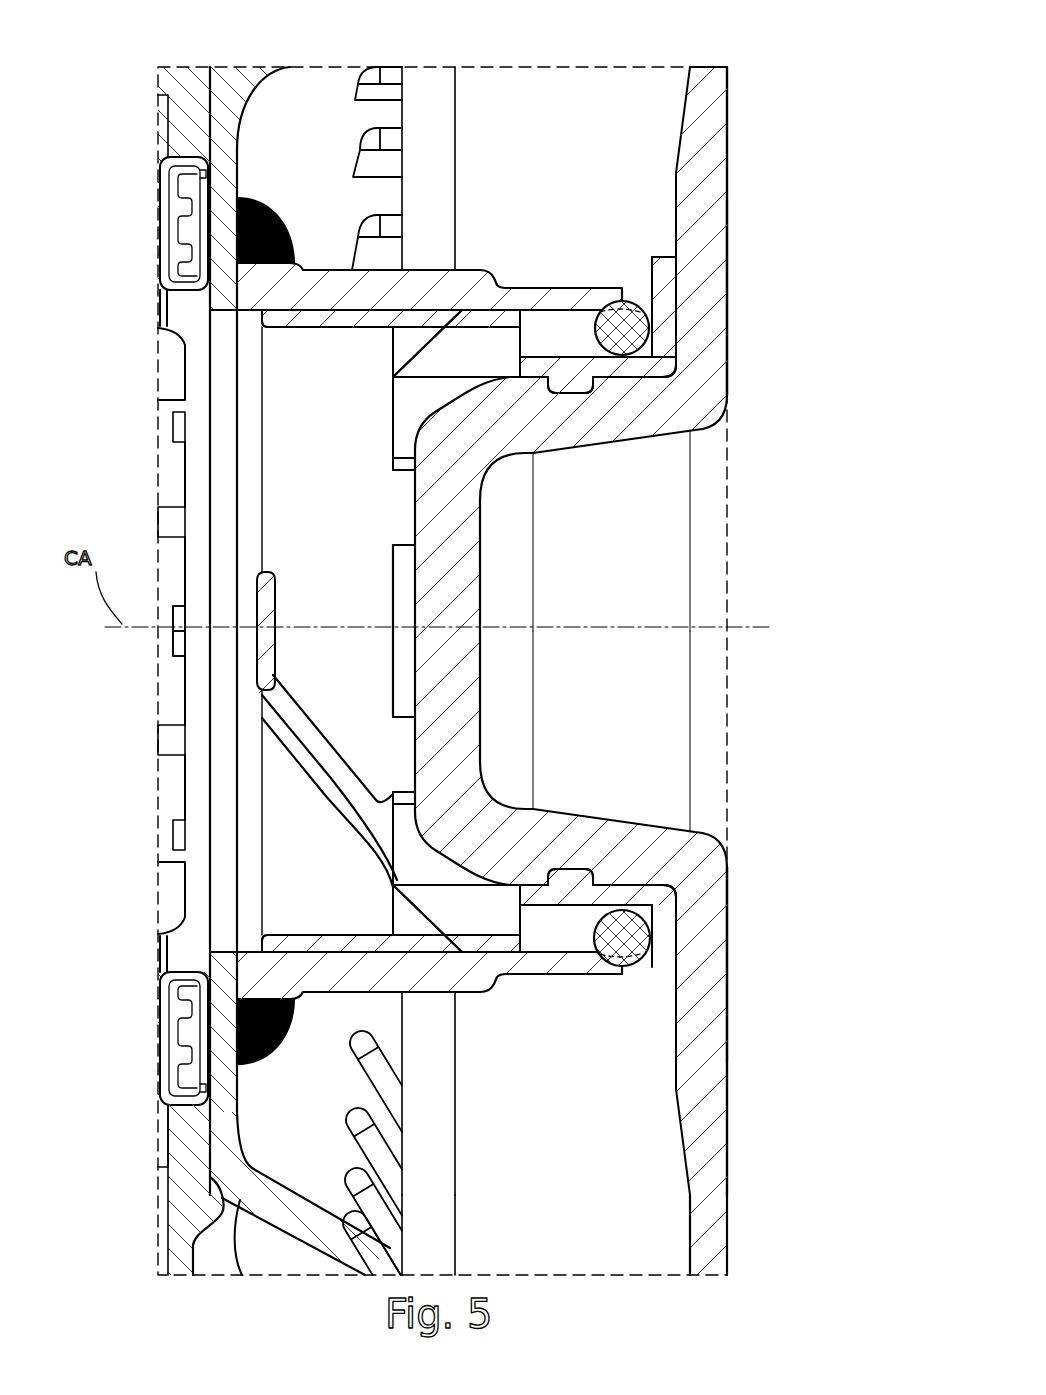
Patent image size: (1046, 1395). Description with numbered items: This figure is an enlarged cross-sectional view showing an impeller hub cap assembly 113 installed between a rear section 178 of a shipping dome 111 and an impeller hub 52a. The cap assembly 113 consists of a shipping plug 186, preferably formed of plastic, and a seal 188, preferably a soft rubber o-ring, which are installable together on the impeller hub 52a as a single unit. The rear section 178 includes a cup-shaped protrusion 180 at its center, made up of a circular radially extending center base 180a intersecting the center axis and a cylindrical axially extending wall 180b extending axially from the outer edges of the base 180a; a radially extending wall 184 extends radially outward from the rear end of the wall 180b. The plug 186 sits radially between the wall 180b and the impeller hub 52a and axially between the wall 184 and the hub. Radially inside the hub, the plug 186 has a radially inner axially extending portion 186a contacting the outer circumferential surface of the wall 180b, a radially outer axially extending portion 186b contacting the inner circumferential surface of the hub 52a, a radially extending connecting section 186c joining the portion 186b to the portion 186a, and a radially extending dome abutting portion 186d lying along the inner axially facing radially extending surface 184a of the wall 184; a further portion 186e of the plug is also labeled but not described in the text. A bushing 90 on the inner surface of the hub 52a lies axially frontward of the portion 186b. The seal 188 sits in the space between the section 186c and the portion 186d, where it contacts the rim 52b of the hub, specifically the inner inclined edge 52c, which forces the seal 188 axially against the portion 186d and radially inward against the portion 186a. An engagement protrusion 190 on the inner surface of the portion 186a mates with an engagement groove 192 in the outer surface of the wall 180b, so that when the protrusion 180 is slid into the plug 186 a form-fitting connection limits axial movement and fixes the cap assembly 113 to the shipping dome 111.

The shipping dome 111 is at (739, 56).
The radially extending wall 184 is at (712, 168).
The inner axially facing radially extending surface 184a is at (690, 255).
The rear section 178 is at (746, 268).
The impeller hub cap assembly 113 is at (705, 332).
The impeller hub 52a is at (340, 282).
The rim 52b is at (640, 368).
The inner inclined edge 52c is at (614, 320).
The bushing 90 is at (262, 318).
The shipping plug 186 is at (372, 399).
The radially inner axially extending portion 186a is at (650, 374).
The radially outer axially extending portion 186b is at (462, 320).
The radially extending connecting section 186c is at (443, 342).
The radially extending dome abutting portion 186d is at (665, 262).
The bearing cup protrusion 186e is at (390, 444).
The seal 188 is at (645, 314).
The engagement protrusion 190 is at (573, 365).
The engagement groove 192 is at (566, 394).
The cup-shaped protrusion 180 is at (402, 540).
The center base 180a is at (455, 572).
The cylindrical axially extending wall 180b is at (625, 412).